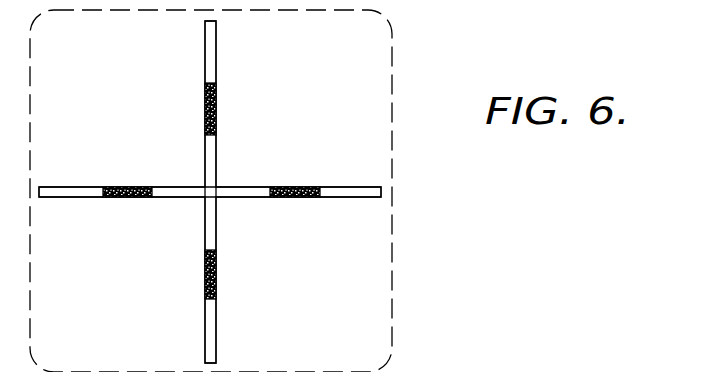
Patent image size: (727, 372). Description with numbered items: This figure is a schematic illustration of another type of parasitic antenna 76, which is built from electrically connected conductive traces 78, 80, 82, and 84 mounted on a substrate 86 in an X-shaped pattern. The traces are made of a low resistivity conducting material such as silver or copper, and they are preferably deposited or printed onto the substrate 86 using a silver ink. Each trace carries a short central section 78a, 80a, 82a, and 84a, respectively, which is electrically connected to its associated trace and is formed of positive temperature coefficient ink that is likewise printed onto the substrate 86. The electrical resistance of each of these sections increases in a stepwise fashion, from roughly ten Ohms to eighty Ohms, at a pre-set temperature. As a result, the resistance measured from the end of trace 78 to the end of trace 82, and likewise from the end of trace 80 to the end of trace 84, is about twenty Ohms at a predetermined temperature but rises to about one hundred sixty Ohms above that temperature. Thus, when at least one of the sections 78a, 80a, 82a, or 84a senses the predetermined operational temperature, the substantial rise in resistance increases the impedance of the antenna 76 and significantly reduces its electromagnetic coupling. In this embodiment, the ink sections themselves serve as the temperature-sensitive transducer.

The parasitic antenna 76 is at (420, 45).
The conductive trace 78 is at (211, 50).
The central section 78a is at (214, 97).
The conductive trace 80 is at (350, 187).
The central section 80a is at (292, 198).
The conductive trace 82 is at (213, 335).
The central section 82a is at (205, 271).
The conductive trace 84 is at (65, 197).
The central section 84a is at (130, 186).
The substrate 86 is at (382, 260).